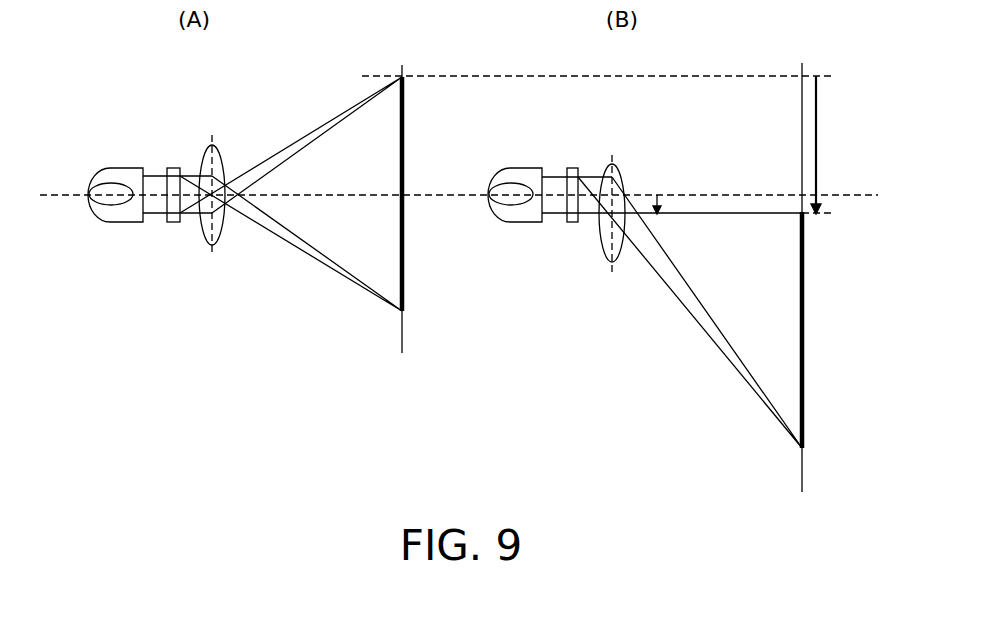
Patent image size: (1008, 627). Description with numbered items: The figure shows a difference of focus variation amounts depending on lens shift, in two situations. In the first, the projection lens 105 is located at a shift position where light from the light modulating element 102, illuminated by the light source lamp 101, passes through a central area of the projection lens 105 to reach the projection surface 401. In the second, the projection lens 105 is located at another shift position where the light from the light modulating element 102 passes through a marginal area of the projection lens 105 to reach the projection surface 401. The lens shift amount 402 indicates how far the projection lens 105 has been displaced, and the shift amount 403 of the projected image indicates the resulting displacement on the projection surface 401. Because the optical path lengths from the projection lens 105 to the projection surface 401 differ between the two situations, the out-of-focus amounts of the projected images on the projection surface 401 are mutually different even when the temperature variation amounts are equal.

The light source lamp 101 is at (112, 173).
The light modulating element 102 is at (173, 170).
The projection lens 105 is at (219, 158).
The projection surface 401 is at (402, 247).
The lens shift amount 402 is at (658, 193).
The shift amount of the projected image 403 is at (817, 165).